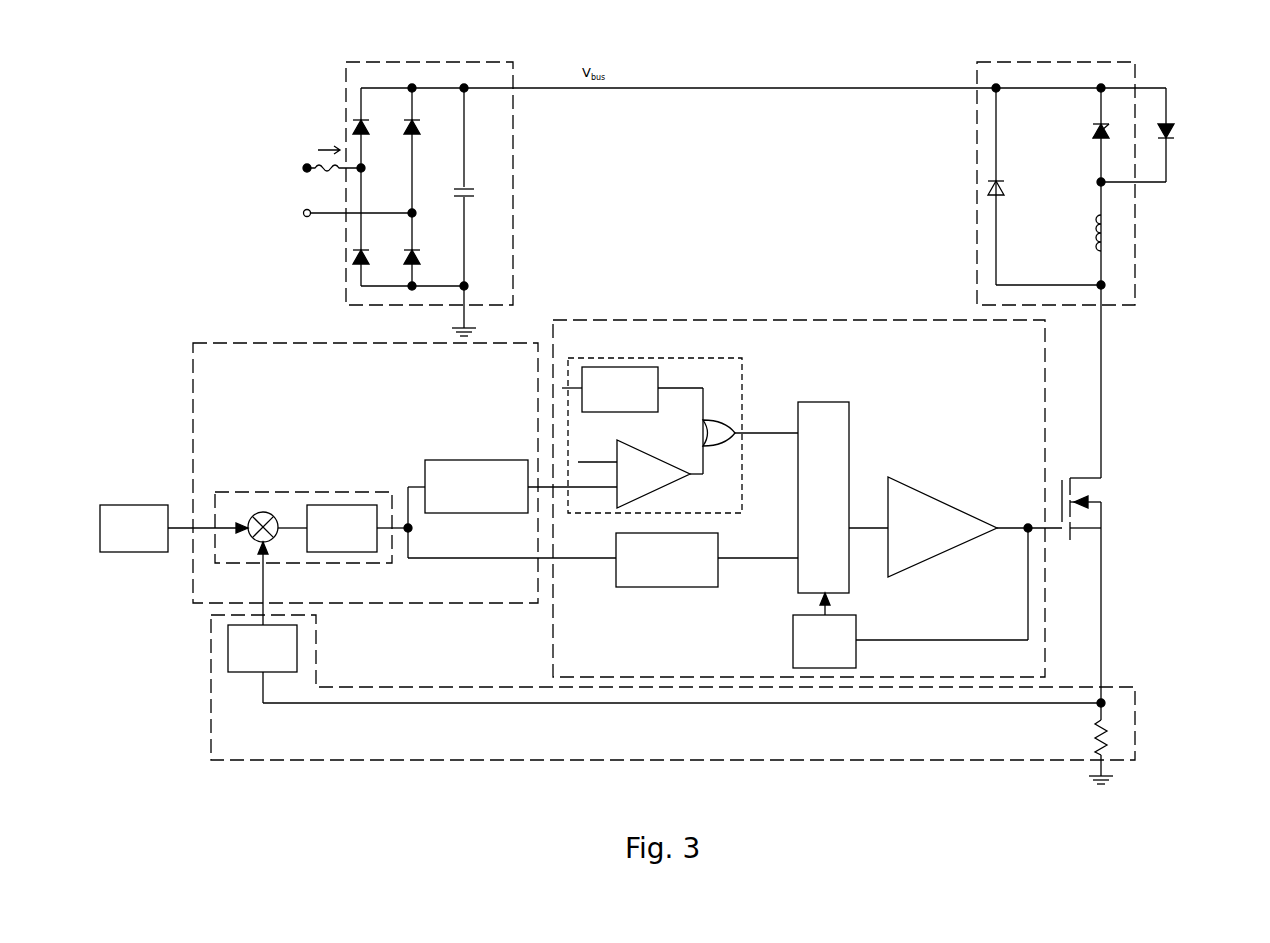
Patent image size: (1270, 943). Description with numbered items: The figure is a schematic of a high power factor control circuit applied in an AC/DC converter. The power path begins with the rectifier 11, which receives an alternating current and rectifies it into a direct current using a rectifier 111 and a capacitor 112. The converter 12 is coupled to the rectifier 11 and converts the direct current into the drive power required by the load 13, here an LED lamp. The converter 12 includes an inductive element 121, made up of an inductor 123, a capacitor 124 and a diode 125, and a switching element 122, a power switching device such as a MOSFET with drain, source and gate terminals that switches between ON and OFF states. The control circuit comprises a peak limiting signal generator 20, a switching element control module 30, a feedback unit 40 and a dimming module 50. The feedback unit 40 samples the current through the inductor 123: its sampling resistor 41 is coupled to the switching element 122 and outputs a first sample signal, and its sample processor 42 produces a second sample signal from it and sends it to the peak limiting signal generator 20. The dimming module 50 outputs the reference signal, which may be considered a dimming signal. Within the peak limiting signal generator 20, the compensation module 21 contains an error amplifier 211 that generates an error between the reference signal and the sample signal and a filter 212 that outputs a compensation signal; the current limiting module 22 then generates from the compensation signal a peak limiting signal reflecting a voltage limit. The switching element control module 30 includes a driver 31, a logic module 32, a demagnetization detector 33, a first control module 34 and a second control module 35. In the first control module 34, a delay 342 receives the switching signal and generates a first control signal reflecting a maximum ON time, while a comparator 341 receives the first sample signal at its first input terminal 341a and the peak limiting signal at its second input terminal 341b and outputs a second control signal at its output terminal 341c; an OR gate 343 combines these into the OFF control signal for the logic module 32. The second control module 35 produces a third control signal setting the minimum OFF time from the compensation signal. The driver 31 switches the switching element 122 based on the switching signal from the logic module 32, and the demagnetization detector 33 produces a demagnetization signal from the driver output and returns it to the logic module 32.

The rectifier 11 is at (375, 62).
The rectifier 111 is at (442, 84).
The capacitor 112 is at (472, 190).
The converter 12 is at (1218, 437).
The inductive element 121 is at (1118, 305).
The switching element 122 is at (1120, 497).
The inductor 123 is at (1112, 234).
The capacitor 124 is at (1099, 126).
The diode 125 is at (988, 182).
The load 13 is at (1188, 137).
The peak limiting signal generator 20 is at (260, 343).
The compensation module 21 is at (277, 492).
The error amplifier 211 is at (245, 540).
The filter 212 is at (340, 505).
The current limiting module 22 is at (440, 460).
The switching element control module 30 is at (1045, 634).
The driver 31 is at (945, 500).
The logic module 32 is at (830, 402).
The demagnetization detector 33 is at (828, 668).
The first control module 34 is at (683, 358).
The comparator 341 is at (672, 470).
The first input terminal 341a is at (617, 462).
The second input terminal 341b is at (615, 490).
The output terminal 341c is at (692, 478).
The delay 342 is at (615, 367).
The OR gate 343 is at (727, 414).
The second control module 35 is at (670, 587).
The feedback unit 40 is at (357, 762).
The sampling resistor 41 is at (1115, 742).
The sample processor 42 is at (228, 650).
The dimming module 50 is at (130, 505).